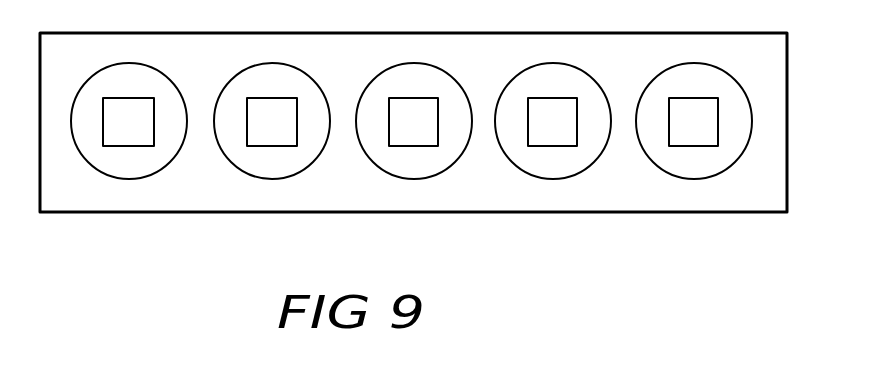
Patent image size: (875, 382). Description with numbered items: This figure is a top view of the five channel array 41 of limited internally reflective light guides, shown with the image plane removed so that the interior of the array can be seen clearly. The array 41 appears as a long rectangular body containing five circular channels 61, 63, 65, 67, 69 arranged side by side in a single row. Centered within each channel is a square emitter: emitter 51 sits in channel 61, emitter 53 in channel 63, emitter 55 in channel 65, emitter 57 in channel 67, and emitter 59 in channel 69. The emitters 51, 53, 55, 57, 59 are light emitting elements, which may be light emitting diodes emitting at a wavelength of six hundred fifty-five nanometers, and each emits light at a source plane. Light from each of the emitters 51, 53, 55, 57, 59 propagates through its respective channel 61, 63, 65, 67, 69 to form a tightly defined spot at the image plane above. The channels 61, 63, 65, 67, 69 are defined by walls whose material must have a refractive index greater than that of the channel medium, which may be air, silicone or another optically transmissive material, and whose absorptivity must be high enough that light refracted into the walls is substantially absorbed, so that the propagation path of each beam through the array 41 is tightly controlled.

The five channel array 41 is at (787, 173).
The emitter 51 is at (137, 105).
The emitter 53 is at (280, 105).
The emitter 55 is at (427, 105).
The emitter 57 is at (567, 105).
The emitter 59 is at (712, 105).
The channel 61 is at (158, 155).
The channel 63 is at (305, 155).
The channel 65 is at (447, 155).
The channel 67 is at (587, 155).
The channel 69 is at (725, 155).